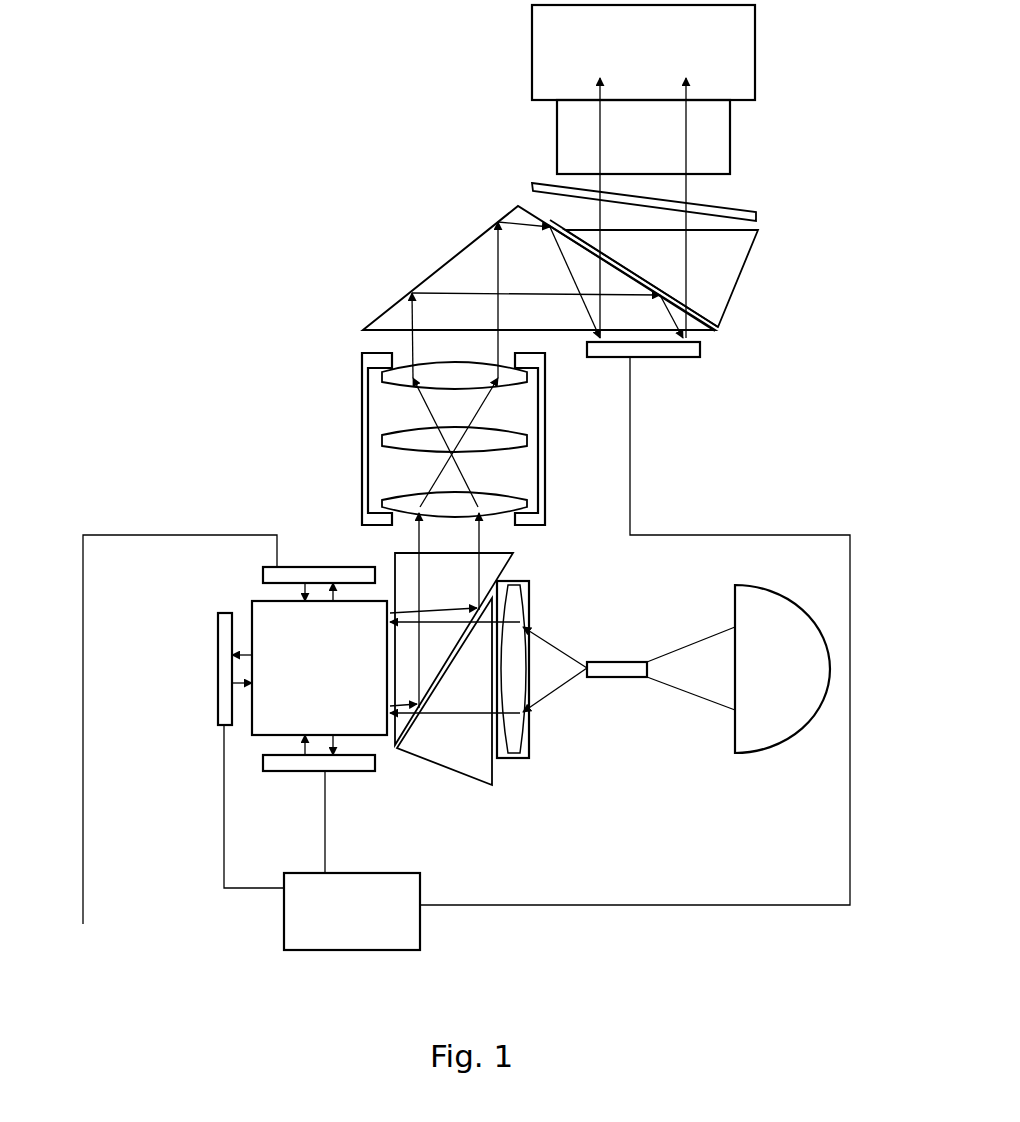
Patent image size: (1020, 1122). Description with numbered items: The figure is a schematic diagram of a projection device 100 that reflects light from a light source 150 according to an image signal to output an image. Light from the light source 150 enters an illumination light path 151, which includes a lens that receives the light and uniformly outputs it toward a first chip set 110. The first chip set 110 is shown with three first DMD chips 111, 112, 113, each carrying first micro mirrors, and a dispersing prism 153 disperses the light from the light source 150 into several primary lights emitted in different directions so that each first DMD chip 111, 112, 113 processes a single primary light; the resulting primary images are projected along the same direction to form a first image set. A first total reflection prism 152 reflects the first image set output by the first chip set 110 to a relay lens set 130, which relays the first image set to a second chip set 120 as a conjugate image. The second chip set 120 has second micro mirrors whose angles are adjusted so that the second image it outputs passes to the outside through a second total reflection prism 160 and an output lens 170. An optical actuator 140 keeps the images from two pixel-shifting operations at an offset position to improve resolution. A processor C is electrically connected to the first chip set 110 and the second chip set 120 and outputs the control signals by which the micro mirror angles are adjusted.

The projection device 100 is at (200, 111).
The first chip set 110 is at (160, 563).
The first DMD chip 111 is at (263, 578).
The first DMD chip 112 is at (218, 670).
The first DMD chip 113 is at (263, 765).
The second chip set 120 is at (672, 353).
The relay lens set 130 is at (365, 440).
The optical actuator 140 is at (532, 188).
The light source 150 is at (763, 732).
The illumination light path 151 is at (518, 758).
The first total reflection prism 152 is at (448, 763).
The dispersing prism 153 is at (357, 730).
The second total reflection prism 160 is at (728, 282).
The output lens 170 is at (745, 52).
The processor C is at (342, 940).